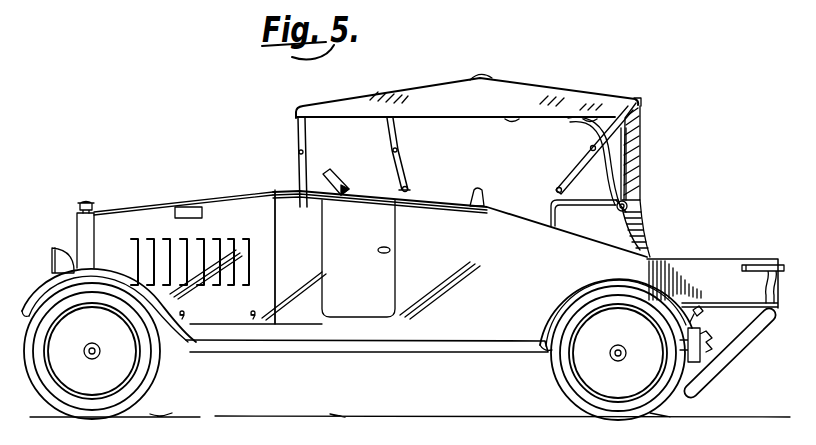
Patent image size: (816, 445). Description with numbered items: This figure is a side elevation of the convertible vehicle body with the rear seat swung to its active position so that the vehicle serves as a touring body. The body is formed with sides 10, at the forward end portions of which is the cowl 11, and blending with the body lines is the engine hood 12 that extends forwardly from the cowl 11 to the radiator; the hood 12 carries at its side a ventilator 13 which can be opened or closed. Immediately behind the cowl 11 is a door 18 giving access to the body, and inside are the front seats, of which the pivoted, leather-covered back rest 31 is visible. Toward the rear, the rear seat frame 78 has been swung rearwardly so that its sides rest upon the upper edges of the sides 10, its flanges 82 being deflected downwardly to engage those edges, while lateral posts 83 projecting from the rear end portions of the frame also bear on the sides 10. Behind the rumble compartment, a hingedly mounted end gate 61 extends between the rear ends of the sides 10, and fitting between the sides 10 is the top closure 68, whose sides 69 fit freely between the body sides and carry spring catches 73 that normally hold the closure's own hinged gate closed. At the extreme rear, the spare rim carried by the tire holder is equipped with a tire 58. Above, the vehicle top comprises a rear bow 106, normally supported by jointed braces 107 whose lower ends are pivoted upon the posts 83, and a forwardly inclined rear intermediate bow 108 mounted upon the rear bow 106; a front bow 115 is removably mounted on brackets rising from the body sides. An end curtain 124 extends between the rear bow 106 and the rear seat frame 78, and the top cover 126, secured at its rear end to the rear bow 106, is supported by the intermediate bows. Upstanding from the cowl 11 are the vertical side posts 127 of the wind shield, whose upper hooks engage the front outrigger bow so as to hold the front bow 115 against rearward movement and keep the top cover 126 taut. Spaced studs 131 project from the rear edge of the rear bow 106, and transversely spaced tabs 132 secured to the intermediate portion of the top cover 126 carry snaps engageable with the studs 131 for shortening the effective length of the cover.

The sides 10 is at (420, 257).
The cowl 11 is at (289, 258).
The engine hood 12 is at (190, 252).
The ventilator 13 is at (185, 207).
The door 18 is at (358, 258).
The back rest 31 is at (476, 189).
The tire 58 is at (740, 350).
The end gate 61 is at (703, 316).
The top closure 68 is at (716, 301).
The sides of the closure 69 is at (694, 267).
The spring catches 73 is at (753, 266).
The rear seat frame 78 is at (601, 204).
The flanges 82 is at (618, 214).
The lateral posts 83 is at (630, 206).
The rear bow 106 is at (566, 178).
The jointed braces 107 is at (630, 180).
The rear intermediate bow 108 is at (575, 123).
The front bow 115 is at (401, 150).
The end curtain 124 is at (632, 141).
The top cover 126 is at (568, 92).
The side posts 127 is at (298, 133).
The studs 131 is at (641, 104).
The tabs 132 is at (483, 74).